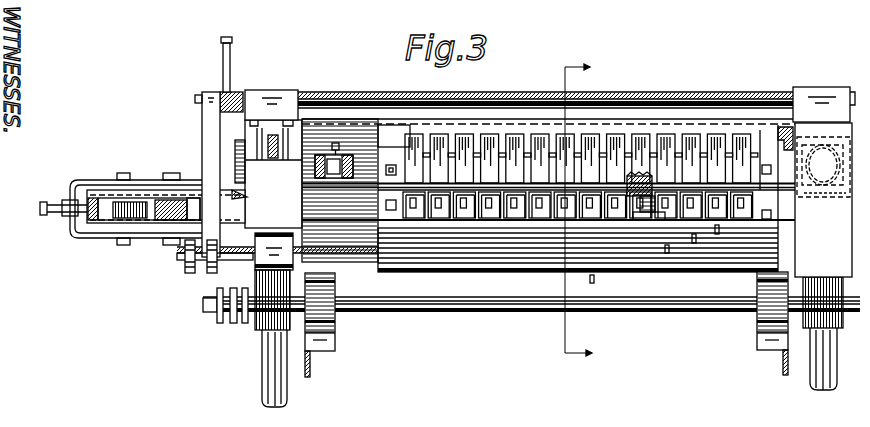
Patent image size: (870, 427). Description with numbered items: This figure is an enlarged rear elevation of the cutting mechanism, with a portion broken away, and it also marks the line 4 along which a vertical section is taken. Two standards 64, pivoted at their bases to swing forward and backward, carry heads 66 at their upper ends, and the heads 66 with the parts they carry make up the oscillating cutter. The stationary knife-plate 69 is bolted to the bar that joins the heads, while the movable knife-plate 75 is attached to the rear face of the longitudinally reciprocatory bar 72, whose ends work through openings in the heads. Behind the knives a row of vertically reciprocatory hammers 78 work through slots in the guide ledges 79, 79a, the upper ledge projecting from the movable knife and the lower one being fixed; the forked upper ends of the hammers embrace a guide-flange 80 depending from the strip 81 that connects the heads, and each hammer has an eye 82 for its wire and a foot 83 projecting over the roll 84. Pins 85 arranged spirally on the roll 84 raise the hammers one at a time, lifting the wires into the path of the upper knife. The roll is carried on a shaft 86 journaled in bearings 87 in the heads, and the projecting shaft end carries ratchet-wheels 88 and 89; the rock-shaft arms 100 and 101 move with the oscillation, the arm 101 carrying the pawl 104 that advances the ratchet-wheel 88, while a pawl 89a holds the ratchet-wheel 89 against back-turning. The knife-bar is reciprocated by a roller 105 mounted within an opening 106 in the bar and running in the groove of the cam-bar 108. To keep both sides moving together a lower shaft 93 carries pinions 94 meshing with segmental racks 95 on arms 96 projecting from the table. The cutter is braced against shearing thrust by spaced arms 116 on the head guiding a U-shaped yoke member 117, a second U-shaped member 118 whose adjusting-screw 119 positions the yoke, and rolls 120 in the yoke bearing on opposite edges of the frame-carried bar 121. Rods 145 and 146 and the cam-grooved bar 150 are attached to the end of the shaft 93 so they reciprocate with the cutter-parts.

The section line 4— 4 is at (578, 215).
The standards 64 is at (263, 393).
The heads 66 is at (558, 182).
The stationary knife-plate 69 is at (652, 214).
The reciprocatory bar 72 is at (308, 160).
The knife-plate 75 is at (629, 184).
The hammers 78 is at (668, 140).
The guide ledge 79 is at (386, 190).
The guide ledge 79a is at (393, 203).
The guide-flange 80 is at (394, 136).
The strip 81 is at (330, 123).
The eyes 82 is at (512, 218).
The foot 83 is at (440, 218).
The roll 84 is at (716, 268).
The pins 85 is at (634, 282).
The shaft 86 is at (369, 258).
The bearings 87 is at (278, 270).
The ratchet-wheel 88 is at (210, 273).
The ratchet-wheel 89 is at (190, 267).
The pawl 89a is at (180, 252).
The shaft 93 is at (476, 313).
The pinions 94 is at (337, 321).
The segmental racks 95 is at (334, 346).
The arms 96 is at (310, 360).
The arm 100 is at (231, 62).
The arm 101 is at (245, 92).
The pawl 104 is at (205, 134).
The roller 105 is at (344, 179).
The opening 106 is at (341, 158).
The cam-bar 108 is at (328, 179).
The arms 116 is at (147, 190).
The U-shaped yoke member 117 is at (100, 225).
The U-shaped member 118 is at (83, 187).
The adjusting-screw 119 is at (48, 220).
The rolls 120 is at (193, 203).
The bar 121 is at (163, 213).
The rod 145 is at (213, 316).
The rod 146 is at (230, 323).
The bar 150 is at (245, 323).